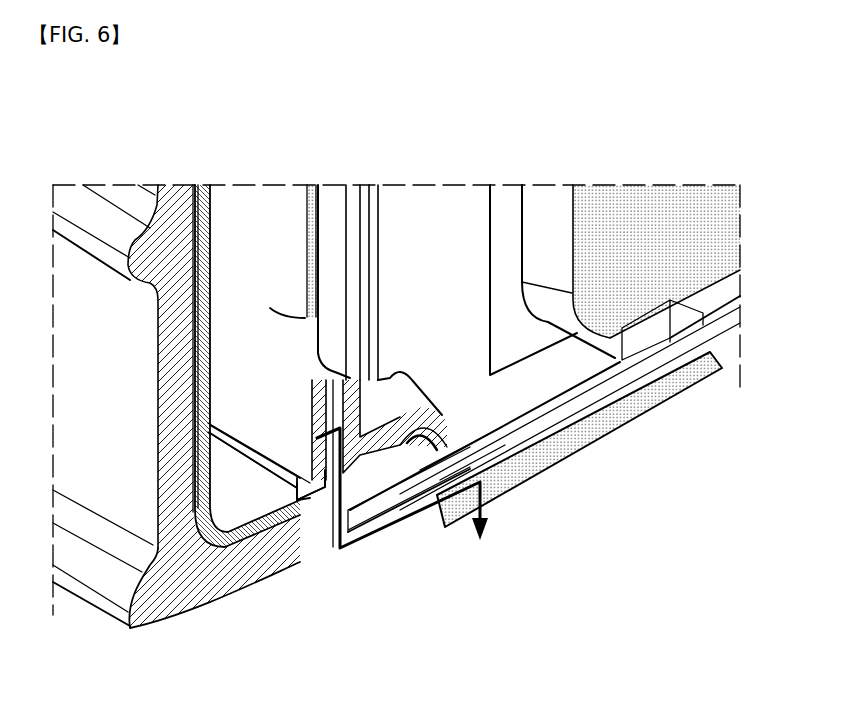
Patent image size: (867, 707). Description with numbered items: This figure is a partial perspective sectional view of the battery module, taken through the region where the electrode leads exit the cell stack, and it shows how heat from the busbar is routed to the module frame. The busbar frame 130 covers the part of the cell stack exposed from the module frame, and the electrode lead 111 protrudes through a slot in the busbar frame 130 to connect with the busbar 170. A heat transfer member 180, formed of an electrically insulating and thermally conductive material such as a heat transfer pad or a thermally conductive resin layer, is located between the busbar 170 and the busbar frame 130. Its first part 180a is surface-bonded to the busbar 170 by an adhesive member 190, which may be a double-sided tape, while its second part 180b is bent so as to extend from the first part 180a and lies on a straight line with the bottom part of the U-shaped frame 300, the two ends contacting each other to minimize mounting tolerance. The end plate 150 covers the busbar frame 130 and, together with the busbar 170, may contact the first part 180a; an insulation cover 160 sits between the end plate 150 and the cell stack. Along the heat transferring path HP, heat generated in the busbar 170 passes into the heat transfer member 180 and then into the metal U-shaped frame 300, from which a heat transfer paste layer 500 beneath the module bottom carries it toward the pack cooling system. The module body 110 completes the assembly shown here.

The battery module body 110 is at (460, 215).
The electrode lead 111 is at (237, 212).
The busbar frame 130 is at (513, 440).
The end plate 150 is at (180, 575).
The insulation cover 160 is at (203, 473).
The busbar 170 is at (305, 540).
The heat transfer member 180 is at (724, 548).
The first part 180a is at (378, 380).
The second part 180b is at (372, 545).
The adhesive member 190 is at (346, 335).
The U-shaped frame 300 is at (672, 372).
The heat transfer paste layer 500 is at (615, 418).
The heat transferring path HP is at (425, 522).